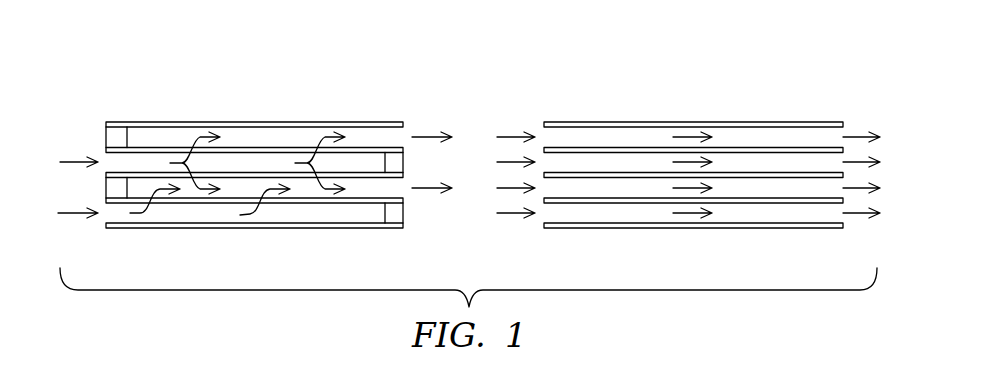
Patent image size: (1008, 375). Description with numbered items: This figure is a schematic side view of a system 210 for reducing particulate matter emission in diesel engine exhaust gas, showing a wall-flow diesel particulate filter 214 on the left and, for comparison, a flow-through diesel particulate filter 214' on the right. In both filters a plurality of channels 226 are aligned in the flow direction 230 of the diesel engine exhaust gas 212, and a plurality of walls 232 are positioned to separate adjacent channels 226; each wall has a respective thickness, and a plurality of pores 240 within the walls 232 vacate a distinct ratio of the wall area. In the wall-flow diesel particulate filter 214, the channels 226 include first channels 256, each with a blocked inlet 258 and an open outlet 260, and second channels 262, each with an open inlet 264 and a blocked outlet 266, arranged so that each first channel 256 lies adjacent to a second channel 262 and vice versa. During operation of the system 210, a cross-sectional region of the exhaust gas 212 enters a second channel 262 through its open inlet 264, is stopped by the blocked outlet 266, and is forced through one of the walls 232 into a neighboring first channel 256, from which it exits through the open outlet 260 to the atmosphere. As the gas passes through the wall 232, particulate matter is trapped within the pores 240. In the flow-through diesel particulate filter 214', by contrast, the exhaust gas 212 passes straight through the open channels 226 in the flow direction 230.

The system 210 is at (119, 34).
The diesel engine exhaust gas 212 is at (82, 162).
The wall-flow diesel particulate filter 214 is at (251, 156).
The flow-through diesel particulate filter 214' is at (688, 145).
The channels 226 is at (252, 163).
The flow direction 230 is at (73, 215).
The walls 232 is at (298, 205).
The pores 240 is at (357, 148).
The first channels 256 is at (280, 140).
The blocked inlet 258 is at (113, 139).
The open outlet 260 is at (393, 137).
The second channels 262 is at (150, 163).
The open inlet 264 is at (118, 162).
The blocked outlet 266 is at (398, 163).